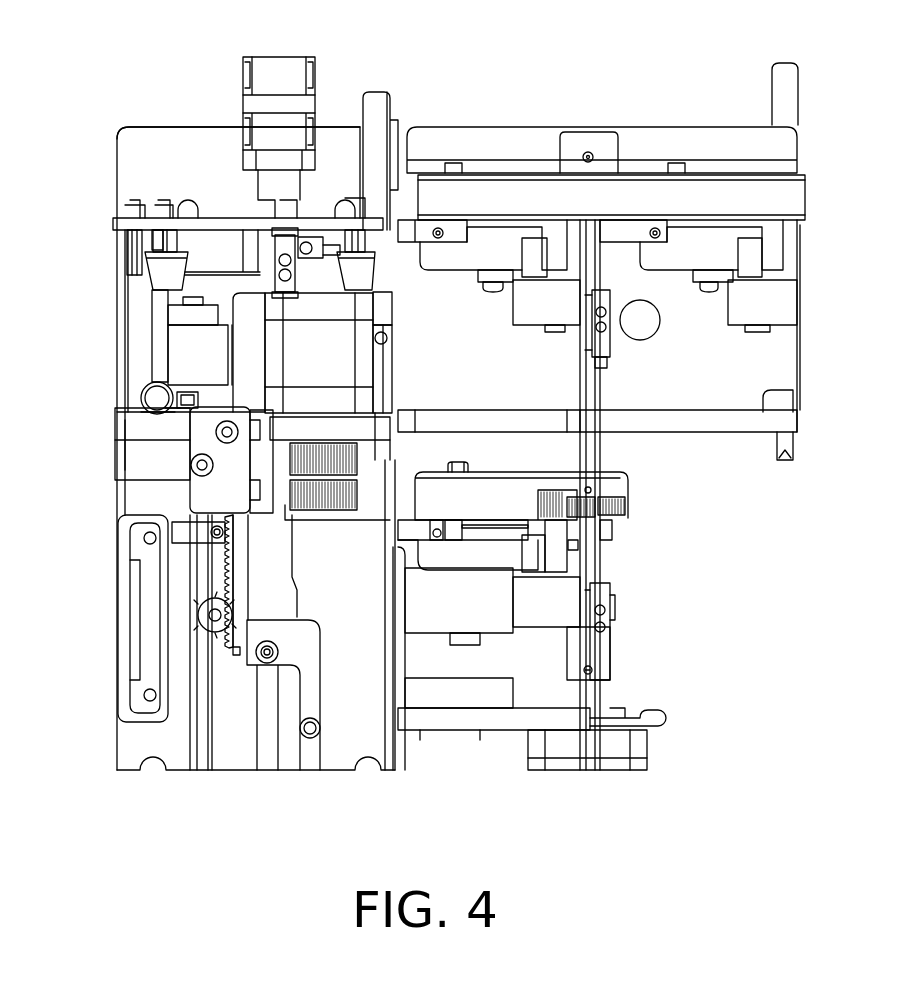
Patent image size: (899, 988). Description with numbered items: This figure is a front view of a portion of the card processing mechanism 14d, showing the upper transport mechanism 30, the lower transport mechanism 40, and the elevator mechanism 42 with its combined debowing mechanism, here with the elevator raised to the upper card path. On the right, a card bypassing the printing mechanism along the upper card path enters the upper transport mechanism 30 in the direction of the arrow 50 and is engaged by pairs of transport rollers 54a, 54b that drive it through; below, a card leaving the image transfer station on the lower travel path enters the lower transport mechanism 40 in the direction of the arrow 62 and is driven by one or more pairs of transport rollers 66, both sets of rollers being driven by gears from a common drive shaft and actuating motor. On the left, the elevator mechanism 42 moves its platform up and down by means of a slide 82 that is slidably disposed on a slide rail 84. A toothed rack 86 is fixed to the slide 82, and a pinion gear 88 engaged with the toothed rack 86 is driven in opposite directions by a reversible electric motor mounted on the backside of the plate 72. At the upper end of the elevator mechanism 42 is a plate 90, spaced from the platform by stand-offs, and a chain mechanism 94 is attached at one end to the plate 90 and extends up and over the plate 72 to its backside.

The card processing mechanism 14d is at (300, 812).
The elevator mechanism 42 is at (100, 332).
The plate 72 is at (150, 135).
The plate 90 is at (220, 225).
The chain mechanism 94 is at (275, 60).
The slide 82 is at (255, 575).
The pinion gear 88 is at (206, 640).
The toothed rack 86 is at (238, 597).
The slide rail 84 is at (274, 700).
The upper transport mechanism 30 is at (590, 119).
The arrow 50 is at (815, 358).
The transport rollers 54a is at (751, 352).
The transport rollers 54b is at (527, 348).
The lower transport mechanism 40 is at (620, 560).
The arrow 62 is at (646, 642).
The transport rollers 66 is at (520, 617).